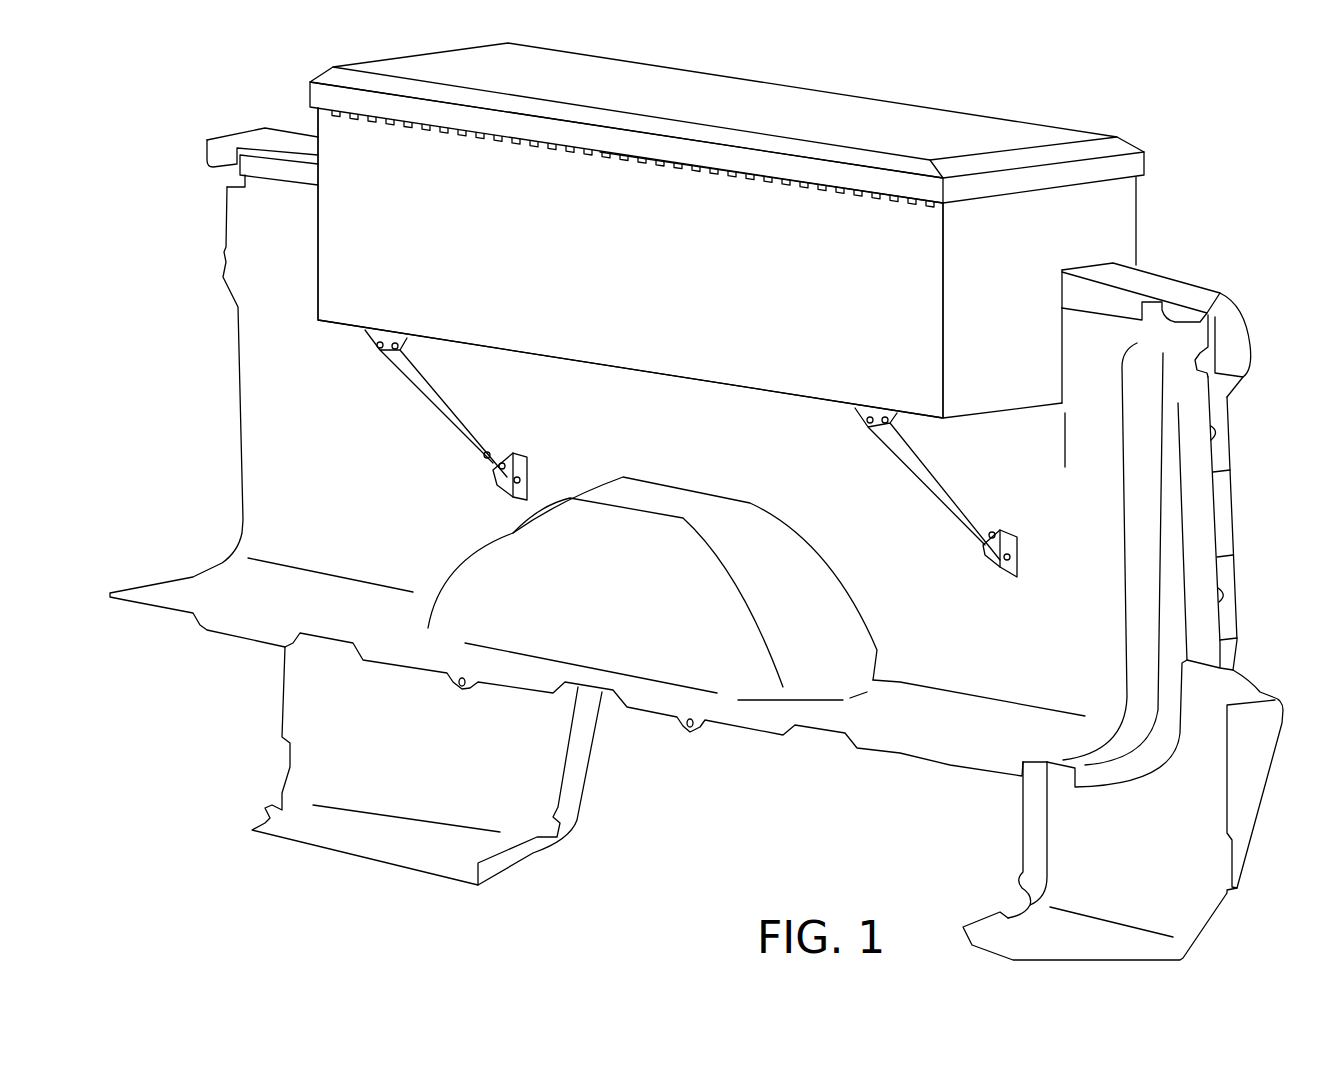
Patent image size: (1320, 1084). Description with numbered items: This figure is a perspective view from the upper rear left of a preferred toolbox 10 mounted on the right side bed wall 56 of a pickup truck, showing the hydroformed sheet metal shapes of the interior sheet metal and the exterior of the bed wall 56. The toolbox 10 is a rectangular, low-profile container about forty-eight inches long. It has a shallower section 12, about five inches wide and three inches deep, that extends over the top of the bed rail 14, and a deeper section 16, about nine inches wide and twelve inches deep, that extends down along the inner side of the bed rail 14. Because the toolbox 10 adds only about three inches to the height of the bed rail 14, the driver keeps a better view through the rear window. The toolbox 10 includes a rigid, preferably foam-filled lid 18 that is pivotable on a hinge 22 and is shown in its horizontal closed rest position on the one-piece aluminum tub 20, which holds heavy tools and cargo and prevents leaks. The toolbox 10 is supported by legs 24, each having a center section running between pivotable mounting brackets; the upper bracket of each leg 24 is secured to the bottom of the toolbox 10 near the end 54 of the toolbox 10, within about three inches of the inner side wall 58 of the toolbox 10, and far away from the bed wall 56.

The toolbox 10 is at (1213, 162).
The shallower section 12 is at (1117, 205).
The bed rail 14 is at (1188, 288).
The deeper section 16 is at (1013, 353).
The lid 18 is at (960, 130).
The tub 20 is at (748, 243).
The hinge 22 is at (382, 117).
The leg 24 is at (418, 387).
The end of the tool box 54 is at (1023, 290).
The bed wall 56 is at (1013, 607).
The inner side wall of the tool box 58 is at (820, 253).